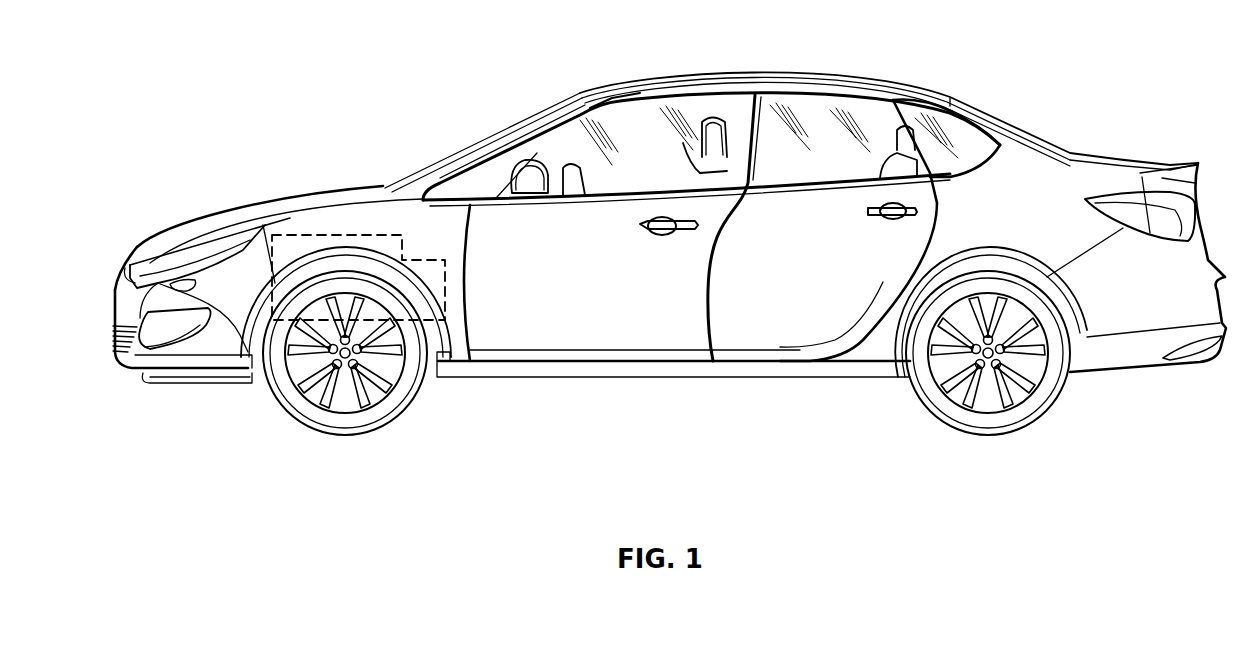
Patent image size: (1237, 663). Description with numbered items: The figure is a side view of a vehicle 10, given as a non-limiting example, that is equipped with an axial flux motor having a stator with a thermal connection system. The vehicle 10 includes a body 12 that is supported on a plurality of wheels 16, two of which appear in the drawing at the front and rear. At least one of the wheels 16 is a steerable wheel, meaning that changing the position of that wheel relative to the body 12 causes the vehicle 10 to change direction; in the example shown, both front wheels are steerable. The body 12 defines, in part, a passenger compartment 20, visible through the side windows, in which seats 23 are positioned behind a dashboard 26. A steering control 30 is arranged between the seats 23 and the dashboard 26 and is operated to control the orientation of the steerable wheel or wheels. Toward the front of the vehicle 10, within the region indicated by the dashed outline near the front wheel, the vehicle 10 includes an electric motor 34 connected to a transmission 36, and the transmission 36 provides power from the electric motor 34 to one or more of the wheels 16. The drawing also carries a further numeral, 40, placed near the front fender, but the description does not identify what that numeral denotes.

The vehicle 10 is at (466, 112).
The body 12 is at (310, 192).
The wheels 16 is at (355, 436).
The passenger compartment 20 is at (657, 128).
The seats 23 is at (705, 135).
The dashboard 26 is at (544, 156).
The steering control 30 is at (607, 106).
The electric motor 34 is at (288, 225).
The transmission 36 is at (468, 298).
The front fender 40 is at (333, 235).